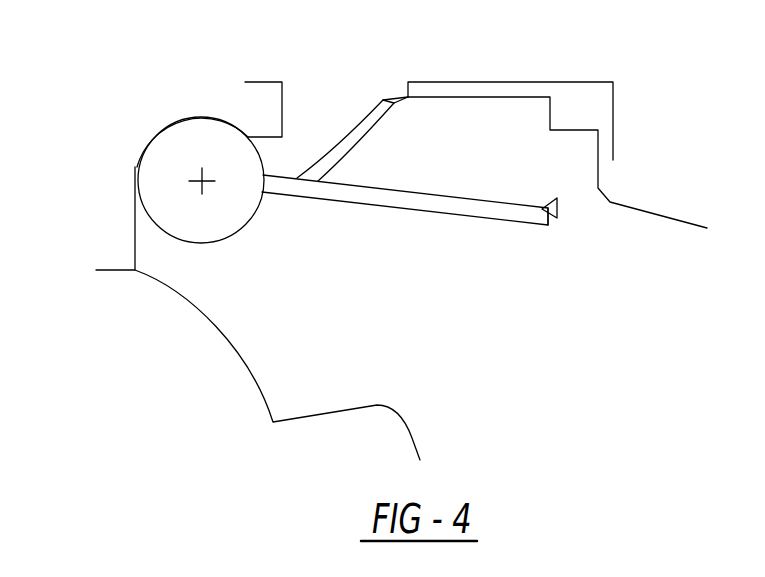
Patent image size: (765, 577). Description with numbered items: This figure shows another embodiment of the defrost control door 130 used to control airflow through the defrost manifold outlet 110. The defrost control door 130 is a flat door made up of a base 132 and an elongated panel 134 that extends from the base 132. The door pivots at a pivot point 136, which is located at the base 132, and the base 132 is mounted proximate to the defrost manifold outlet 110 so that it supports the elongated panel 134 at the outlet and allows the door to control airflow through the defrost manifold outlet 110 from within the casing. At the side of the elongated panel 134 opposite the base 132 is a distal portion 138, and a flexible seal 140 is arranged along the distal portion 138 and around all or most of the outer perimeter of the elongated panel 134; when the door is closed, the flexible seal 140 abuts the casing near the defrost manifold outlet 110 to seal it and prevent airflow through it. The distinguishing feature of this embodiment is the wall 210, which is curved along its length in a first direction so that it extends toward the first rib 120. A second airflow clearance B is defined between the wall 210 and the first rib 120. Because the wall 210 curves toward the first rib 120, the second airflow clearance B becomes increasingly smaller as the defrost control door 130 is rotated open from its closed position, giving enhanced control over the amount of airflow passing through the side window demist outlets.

The defrost manifold outlet 110 is at (393, 82).
The first rib 120 is at (490, 88).
The defrost control door 130 is at (370, 224).
The base 132 is at (165, 180).
The elongated panel 134 is at (475, 210).
The pivot point 136 is at (202, 181).
The distal portion 138 is at (552, 222).
The flexible seal 140 is at (560, 208).
The wall 210 is at (368, 100).
The second airflow clearance B is at (395, 102).